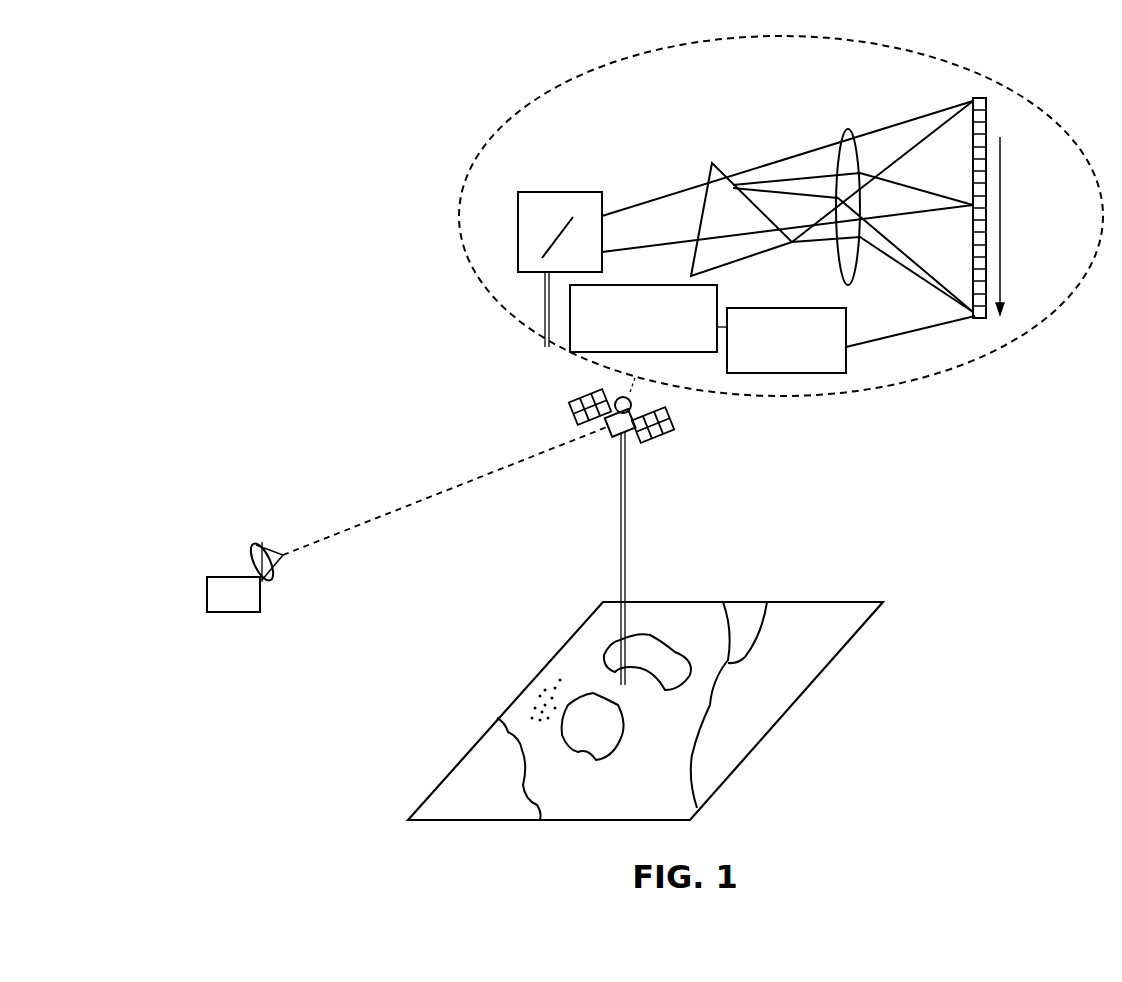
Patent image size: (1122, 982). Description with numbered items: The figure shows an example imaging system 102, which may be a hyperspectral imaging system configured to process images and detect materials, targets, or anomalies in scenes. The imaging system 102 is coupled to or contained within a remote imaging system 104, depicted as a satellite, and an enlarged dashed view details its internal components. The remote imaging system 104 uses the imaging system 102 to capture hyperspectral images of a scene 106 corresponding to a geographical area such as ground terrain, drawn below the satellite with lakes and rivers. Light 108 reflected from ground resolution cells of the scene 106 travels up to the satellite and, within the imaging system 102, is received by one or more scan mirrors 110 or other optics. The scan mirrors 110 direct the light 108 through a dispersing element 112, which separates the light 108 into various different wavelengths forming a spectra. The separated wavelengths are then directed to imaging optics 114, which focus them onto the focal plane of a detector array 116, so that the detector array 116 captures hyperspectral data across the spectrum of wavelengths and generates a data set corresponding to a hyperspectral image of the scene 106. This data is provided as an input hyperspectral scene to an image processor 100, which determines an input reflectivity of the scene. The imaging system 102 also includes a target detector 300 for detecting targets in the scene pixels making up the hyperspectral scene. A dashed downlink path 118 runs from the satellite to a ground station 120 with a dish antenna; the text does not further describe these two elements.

The image processor 100 is at (779, 374).
The imaging system 102 is at (928, 378).
The remote imaging system 104 is at (672, 432).
The scene 106 is at (500, 710).
The light 108 is at (544, 297).
The scan mirrors 110 is at (563, 192).
The dispersing element 112 is at (722, 168).
The imaging optics 114 is at (850, 128).
The detector array 116 is at (978, 97).
The downlink communication path 118 is at (420, 495).
The ground station 120 is at (225, 575).
The target detector 300 is at (643, 318).